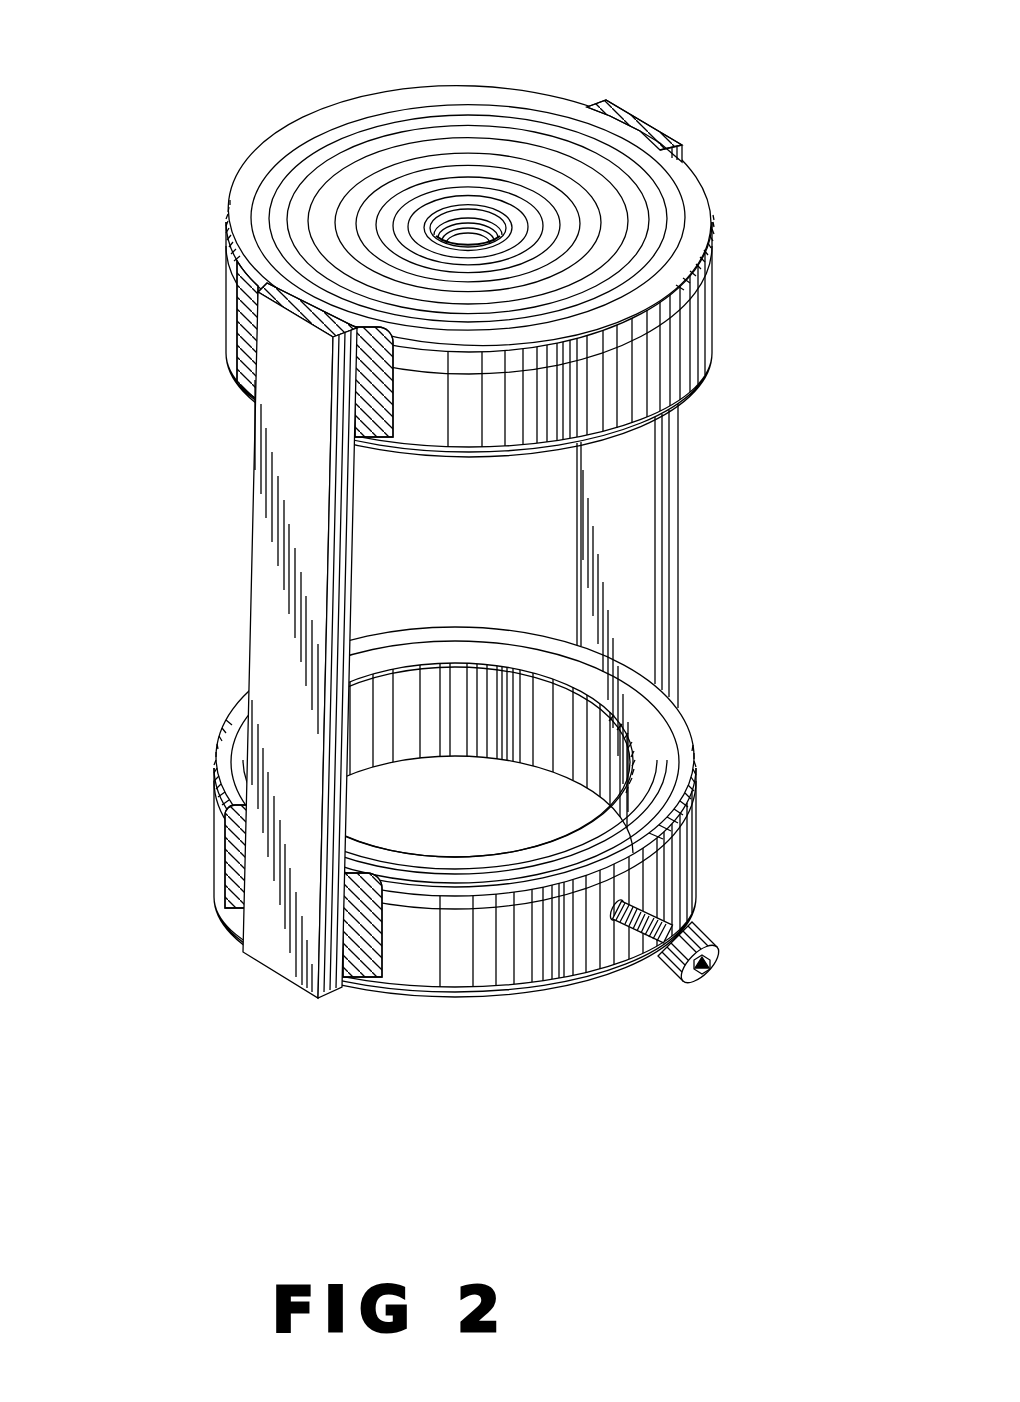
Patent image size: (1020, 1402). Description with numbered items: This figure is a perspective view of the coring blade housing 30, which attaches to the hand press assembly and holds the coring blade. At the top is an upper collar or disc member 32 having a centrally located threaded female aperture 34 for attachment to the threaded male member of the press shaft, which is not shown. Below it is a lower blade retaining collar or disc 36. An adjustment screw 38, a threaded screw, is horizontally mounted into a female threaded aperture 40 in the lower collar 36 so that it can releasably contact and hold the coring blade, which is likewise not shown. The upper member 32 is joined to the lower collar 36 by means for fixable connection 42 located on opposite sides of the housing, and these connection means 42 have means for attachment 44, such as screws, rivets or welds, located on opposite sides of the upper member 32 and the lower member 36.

The coring blade housing 30 is at (726, 628).
The upper collar or disc member 32 is at (431, 102).
The threaded female aperture 34 is at (470, 233).
The lower blade retaining collar or disc 36 is at (657, 797).
The adjustment screw 38 is at (717, 949).
The female threaded aperture 40 is at (637, 903).
The means for fixable connection 42 is at (668, 491).
The means for attachment 44 is at (228, 351).